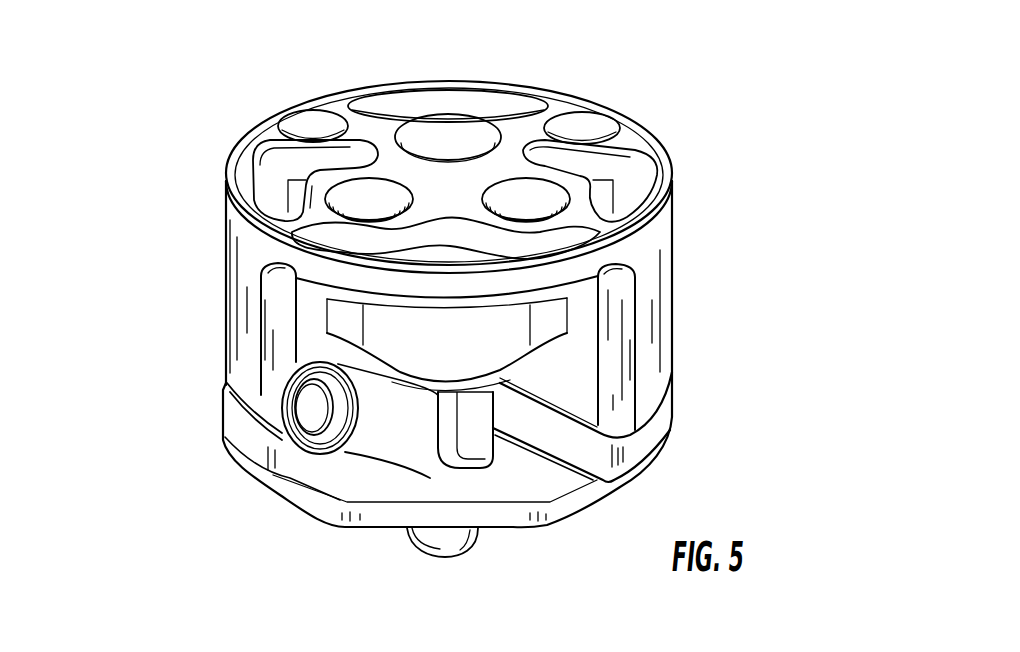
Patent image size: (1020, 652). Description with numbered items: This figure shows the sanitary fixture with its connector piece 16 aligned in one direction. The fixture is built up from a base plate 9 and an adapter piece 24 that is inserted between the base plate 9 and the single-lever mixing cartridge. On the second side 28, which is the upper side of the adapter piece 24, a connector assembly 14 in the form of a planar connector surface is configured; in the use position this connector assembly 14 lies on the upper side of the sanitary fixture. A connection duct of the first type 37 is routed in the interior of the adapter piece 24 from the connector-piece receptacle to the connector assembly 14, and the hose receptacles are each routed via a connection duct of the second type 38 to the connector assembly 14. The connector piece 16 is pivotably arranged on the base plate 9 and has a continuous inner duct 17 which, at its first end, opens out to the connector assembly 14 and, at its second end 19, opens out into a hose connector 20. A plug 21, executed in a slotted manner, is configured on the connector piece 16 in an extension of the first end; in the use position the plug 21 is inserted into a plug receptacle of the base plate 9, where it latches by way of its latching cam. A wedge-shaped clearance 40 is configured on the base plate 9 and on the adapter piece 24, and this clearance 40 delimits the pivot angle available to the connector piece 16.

The connector assembly 14 is at (580, 62).
The second side 28 is at (513, 130).
The connection duct of first type 37 is at (435, 138).
The connection duct of second type 38 is at (352, 195).
The adapter piece 24 is at (657, 318).
The second end 19 is at (303, 358).
The hose connector 20 is at (330, 448).
The inner duct 17 is at (303, 413).
The connector piece 16 is at (420, 450).
The clearance 40 is at (583, 398).
The base plate 9 is at (577, 503).
The plug 21 is at (430, 548).